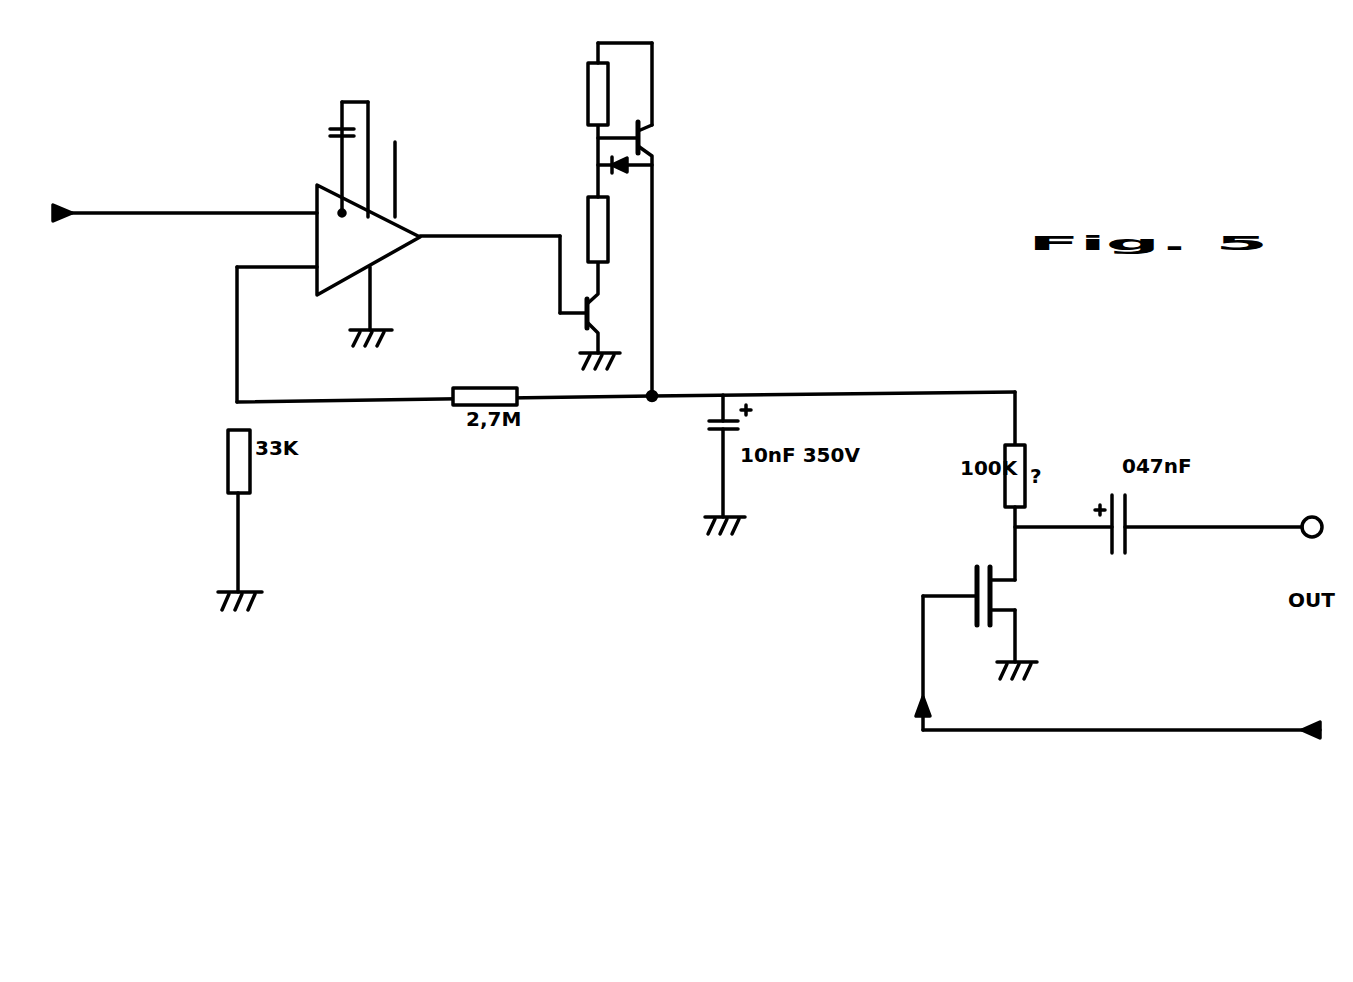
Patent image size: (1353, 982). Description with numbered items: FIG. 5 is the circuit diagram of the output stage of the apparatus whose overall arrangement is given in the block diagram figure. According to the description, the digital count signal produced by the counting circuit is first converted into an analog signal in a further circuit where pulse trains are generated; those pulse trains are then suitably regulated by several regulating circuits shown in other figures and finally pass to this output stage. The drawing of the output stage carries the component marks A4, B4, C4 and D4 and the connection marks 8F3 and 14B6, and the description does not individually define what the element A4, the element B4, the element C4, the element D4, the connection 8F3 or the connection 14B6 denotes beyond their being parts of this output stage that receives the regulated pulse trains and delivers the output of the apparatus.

The input signal from block 8F3 is at (185, 201).
The operational amplifier CA3130 A4 is at (406, 252).
The transistor 2N3440 B4 is at (625, 283).
The transistor 2N3440 with +V200 supply C4 is at (665, 212).
The MOSFET switch D4 is at (990, 616).
The control input from block 14B6 is at (1118, 667).